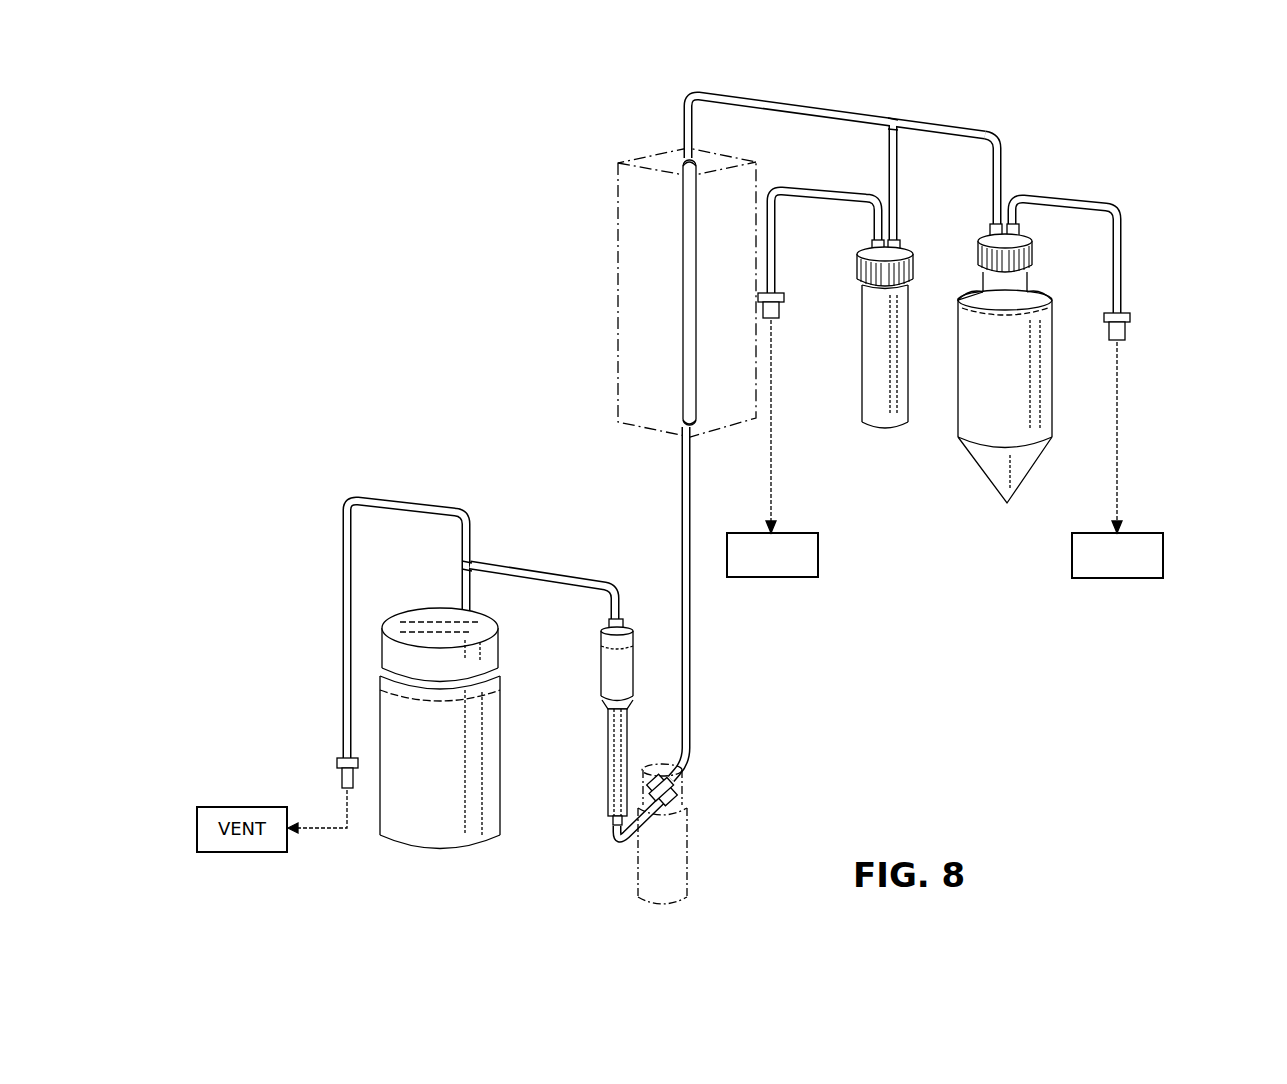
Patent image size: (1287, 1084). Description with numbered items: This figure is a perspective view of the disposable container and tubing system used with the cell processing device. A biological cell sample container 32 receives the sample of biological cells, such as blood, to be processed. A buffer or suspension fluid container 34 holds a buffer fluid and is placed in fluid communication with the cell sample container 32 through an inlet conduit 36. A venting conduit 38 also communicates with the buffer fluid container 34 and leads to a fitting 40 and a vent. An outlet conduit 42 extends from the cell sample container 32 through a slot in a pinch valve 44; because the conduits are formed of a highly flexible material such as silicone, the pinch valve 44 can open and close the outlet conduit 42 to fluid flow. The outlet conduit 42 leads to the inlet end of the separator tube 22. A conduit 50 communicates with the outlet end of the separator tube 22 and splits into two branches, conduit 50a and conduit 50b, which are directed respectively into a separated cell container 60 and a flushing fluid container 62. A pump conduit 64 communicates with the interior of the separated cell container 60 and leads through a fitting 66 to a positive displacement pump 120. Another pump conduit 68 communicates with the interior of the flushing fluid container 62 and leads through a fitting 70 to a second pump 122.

The separator tube 22 is at (682, 294).
The biological cell sample container 32 is at (601, 668).
The buffer or suspension fluid container 34 is at (452, 783).
The inlet conduit 36 is at (547, 578).
The venting conduit 38 is at (342, 614).
The fitting 40 is at (333, 766).
The outlet conduit 42 is at (682, 521).
The pinch valve 44 is at (681, 783).
The conduit 50 is at (822, 106).
The conduit 50a is at (900, 180).
The conduit 50b is at (1003, 162).
The separated cell container 60 is at (862, 376).
The flushing fluid container 62 is at (1010, 386).
The pump conduit 64 is at (826, 187).
The fitting 66 is at (784, 305).
The pump conduit 68 is at (1123, 252).
The fitting 70 is at (1130, 335).
The positive displacement pump 120 is at (818, 556).
The second pump 122 is at (1163, 556).